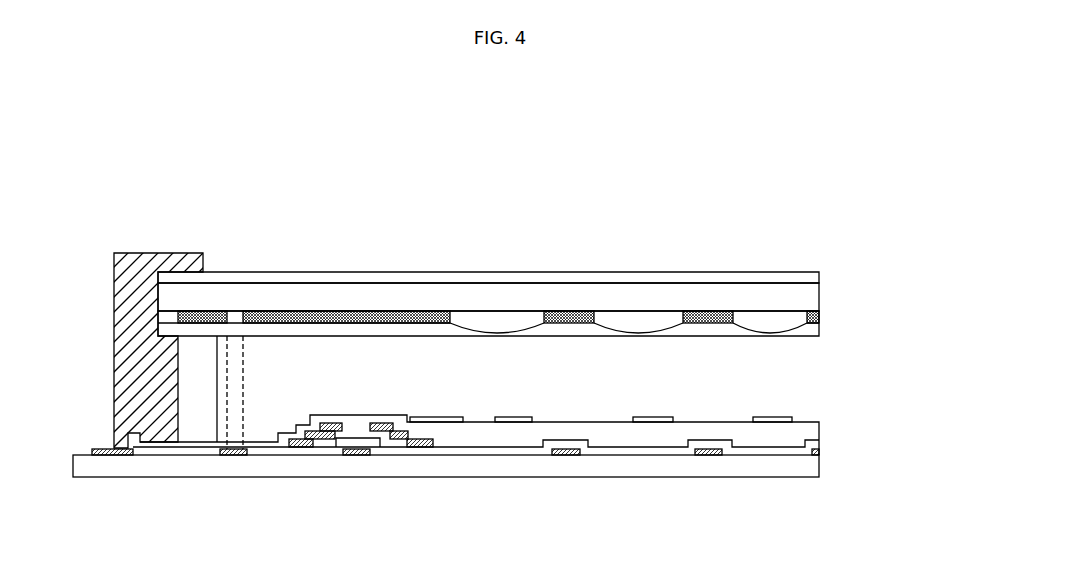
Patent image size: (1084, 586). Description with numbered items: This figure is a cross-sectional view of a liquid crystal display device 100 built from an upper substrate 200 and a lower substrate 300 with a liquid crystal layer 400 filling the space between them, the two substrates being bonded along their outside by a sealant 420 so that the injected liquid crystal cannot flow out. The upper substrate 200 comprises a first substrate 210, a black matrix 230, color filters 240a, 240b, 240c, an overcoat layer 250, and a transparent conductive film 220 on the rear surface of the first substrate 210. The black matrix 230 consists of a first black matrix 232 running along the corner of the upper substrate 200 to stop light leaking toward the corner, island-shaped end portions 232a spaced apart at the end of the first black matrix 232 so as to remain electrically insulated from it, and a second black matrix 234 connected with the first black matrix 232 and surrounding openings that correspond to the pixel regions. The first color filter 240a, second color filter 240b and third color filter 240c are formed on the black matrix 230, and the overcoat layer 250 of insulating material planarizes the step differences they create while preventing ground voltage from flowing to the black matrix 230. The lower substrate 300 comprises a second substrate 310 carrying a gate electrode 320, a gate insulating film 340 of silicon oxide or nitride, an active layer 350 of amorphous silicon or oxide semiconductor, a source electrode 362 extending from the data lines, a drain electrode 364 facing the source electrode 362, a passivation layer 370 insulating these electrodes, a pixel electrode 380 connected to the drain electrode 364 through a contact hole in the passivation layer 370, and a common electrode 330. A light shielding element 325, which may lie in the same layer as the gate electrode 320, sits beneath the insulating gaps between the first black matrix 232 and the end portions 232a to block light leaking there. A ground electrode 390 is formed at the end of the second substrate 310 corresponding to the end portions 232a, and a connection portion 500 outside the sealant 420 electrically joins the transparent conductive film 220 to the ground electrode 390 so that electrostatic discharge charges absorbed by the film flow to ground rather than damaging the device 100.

The liquid crystal display device 100 is at (823, 242).
The upper substrate 200 is at (877, 275).
The first substrate 210 is at (820, 303).
The transparent conductive film 220 is at (820, 278).
The black matrix 230 is at (488, 174).
The first black matrix 232 is at (372, 311).
The end portions 232a is at (205, 311).
The second black matrix 234 is at (571, 311).
The first color filter 240a is at (498, 322).
The second color filter 240b is at (641, 322).
The third color filter 240c is at (765, 322).
The overcoat layer 250 is at (820, 335).
The lower substrate 300 is at (877, 428).
The second substrate 310 is at (820, 472).
The gate electrode 320 is at (346, 455).
The light shielding element 325 is at (232, 449).
The common electrode 330 is at (566, 455).
The gate insulating film 340 is at (820, 450).
The active layer 350 is at (387, 433).
The source electrode 362 is at (291, 447).
The drain electrode 364 is at (420, 447).
The passivation layer 370 is at (820, 429).
The pixel electrode 380 is at (512, 422).
The ground electrode 390 is at (105, 449).
The liquid crystal layer 400 is at (877, 345).
The sealant 420 is at (197, 433).
The connection portion 500 is at (114, 351).